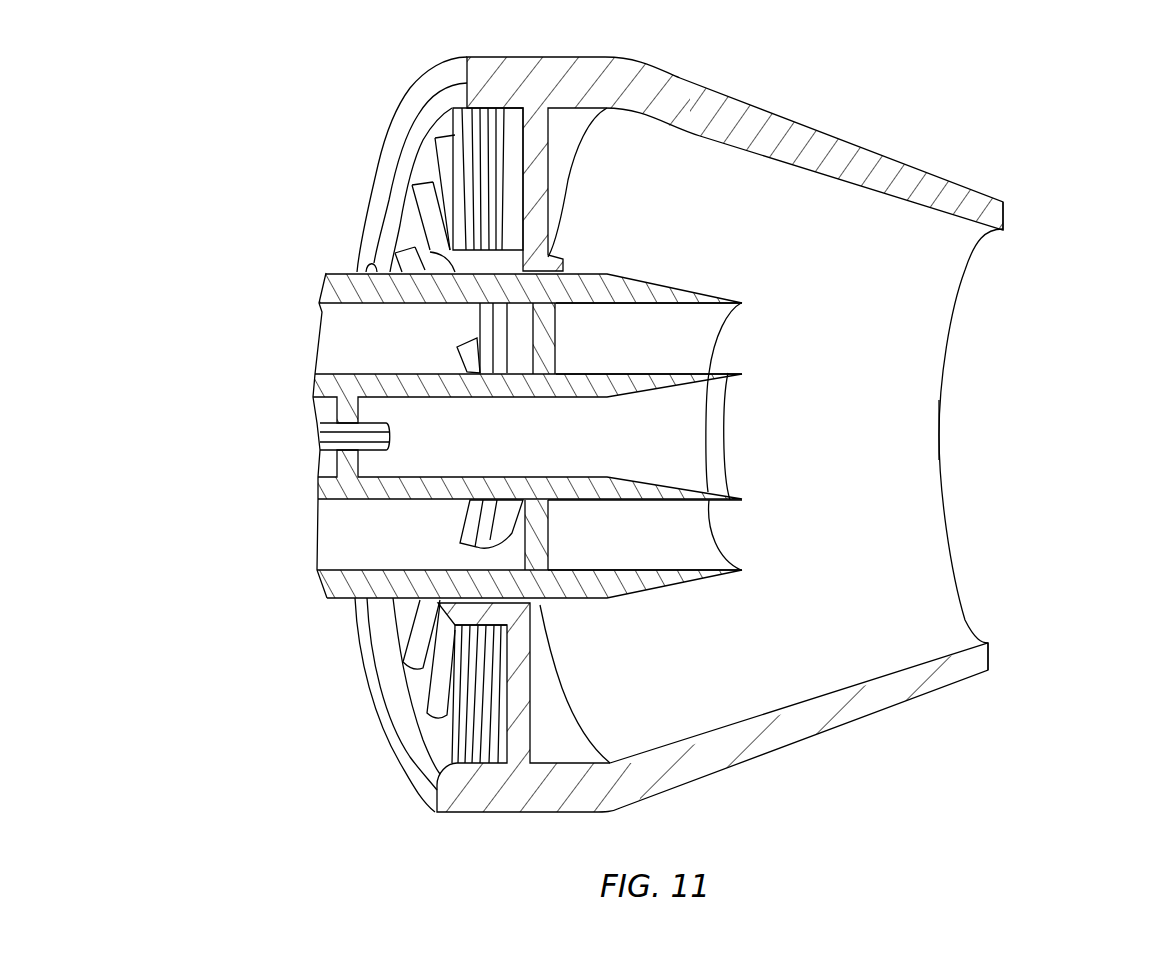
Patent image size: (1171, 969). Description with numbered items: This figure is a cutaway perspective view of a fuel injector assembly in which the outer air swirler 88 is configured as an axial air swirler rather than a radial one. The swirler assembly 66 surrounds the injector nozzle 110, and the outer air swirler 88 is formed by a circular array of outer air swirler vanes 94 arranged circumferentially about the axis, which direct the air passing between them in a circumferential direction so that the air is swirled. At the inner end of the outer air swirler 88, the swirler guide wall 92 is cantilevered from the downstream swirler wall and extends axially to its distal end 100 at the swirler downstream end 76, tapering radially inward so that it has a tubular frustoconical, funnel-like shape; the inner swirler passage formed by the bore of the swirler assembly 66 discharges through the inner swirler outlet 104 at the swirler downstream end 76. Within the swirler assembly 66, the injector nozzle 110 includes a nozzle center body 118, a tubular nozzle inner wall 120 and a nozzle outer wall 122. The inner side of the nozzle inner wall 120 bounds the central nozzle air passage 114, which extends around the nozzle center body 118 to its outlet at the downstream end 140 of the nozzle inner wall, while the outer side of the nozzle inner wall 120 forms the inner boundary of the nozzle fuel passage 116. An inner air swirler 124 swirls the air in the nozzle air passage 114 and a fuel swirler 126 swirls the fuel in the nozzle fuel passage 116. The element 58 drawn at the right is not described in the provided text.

The swirler assembly 66 is at (815, 104).
The swirler guide wall 92 is at (867, 148).
The swirler downstream end 76 is at (1003, 213).
The distal end of the swirler guide wall 100 is at (995, 436).
The passage 58 is at (1127, 413).
The inner swirler outlet 104 is at (950, 425).
The outer air swirler 88 is at (424, 165).
The outer air swirler vanes 94 is at (548, 151).
The downstream end of the nozzle inner wall 140 is at (370, 263).
The injector nozzle 110 is at (297, 608).
The nozzle outer wall 122 is at (326, 283).
The nozzle inner wall 120 is at (318, 383).
The nozzle center body 118 is at (320, 425).
The inner air swirler 124 is at (312, 469).
The nozzle air passage 114 is at (508, 448).
The nozzle fuel passage 116 is at (350, 342).
The fuel swirler 126 is at (566, 345).